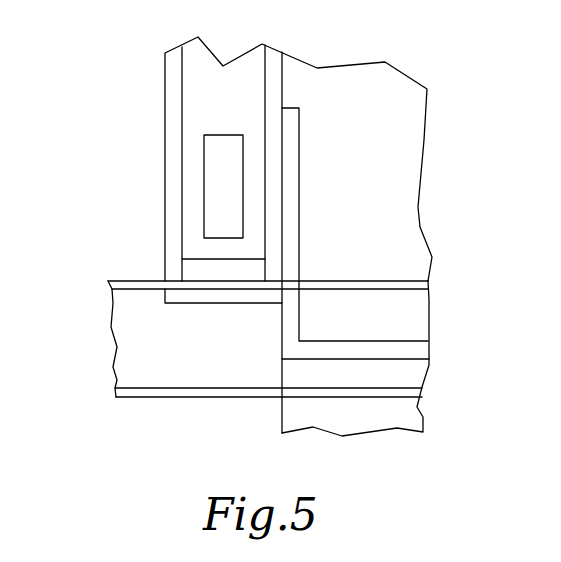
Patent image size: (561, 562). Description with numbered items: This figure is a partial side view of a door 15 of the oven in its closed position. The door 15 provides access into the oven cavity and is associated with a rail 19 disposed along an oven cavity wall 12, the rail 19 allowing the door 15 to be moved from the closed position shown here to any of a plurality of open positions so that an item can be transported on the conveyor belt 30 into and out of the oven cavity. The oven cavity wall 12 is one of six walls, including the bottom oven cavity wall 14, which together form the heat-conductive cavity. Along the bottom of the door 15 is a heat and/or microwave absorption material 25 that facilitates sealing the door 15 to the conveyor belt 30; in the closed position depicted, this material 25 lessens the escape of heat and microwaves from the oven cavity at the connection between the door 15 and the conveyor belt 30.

The door 15 is at (226, 51).
The rail 19 is at (172, 195).
The heat and/or microwave absorption material 25 is at (193, 270).
The bottom oven cavity wall 14 is at (410, 341).
The oven cavity wall 12 is at (288, 342).
The conveyor belt 30 is at (412, 287).